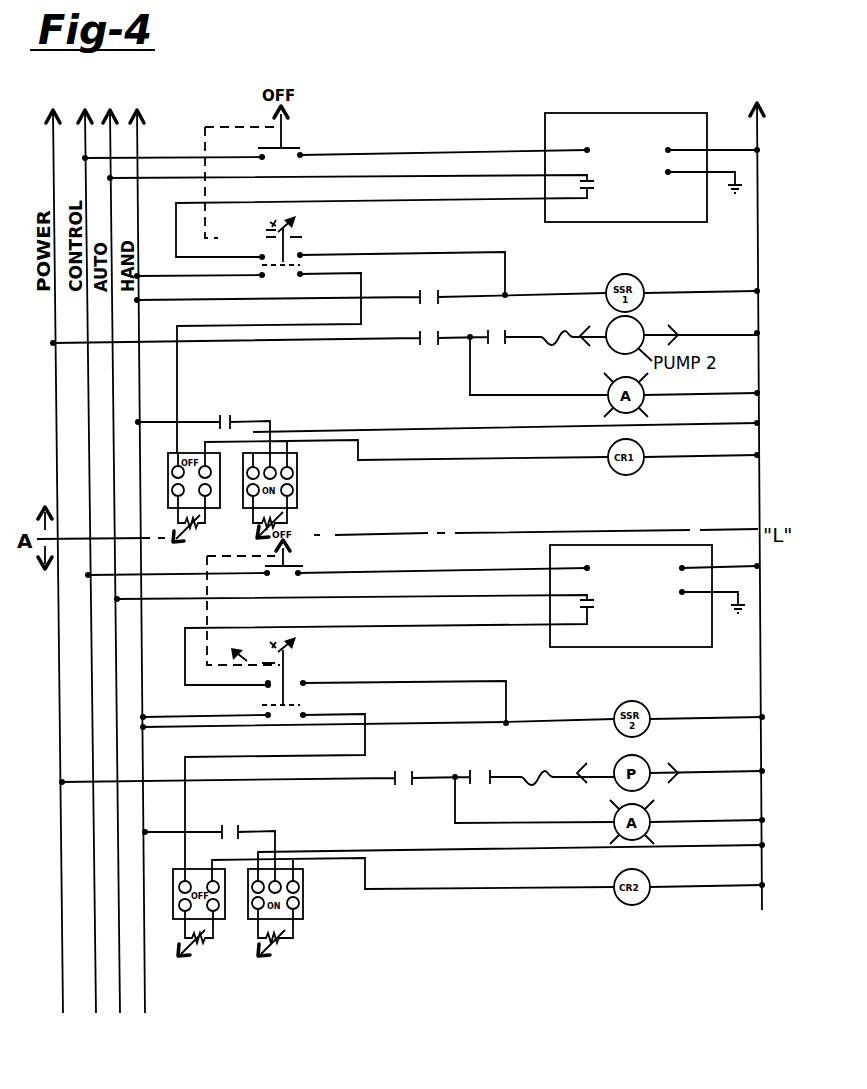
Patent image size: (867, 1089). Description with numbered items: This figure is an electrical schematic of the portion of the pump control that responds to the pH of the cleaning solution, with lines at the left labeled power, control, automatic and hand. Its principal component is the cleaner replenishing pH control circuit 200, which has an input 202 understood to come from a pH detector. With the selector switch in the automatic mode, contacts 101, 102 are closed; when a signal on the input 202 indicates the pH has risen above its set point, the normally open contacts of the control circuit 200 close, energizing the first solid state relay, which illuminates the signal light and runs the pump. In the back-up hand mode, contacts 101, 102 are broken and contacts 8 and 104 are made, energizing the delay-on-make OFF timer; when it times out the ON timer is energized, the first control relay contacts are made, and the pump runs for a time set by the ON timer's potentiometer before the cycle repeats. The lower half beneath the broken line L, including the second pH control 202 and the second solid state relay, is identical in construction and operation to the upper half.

The contact 8 is at (249, 272).
The contact 101 is at (243, 248).
The contact 102 is at (316, 247).
The contact 104 is at (316, 272).
The cleaner replenishing pH control circuit 200 is at (656, 212).
The input 202 is at (656, 638).